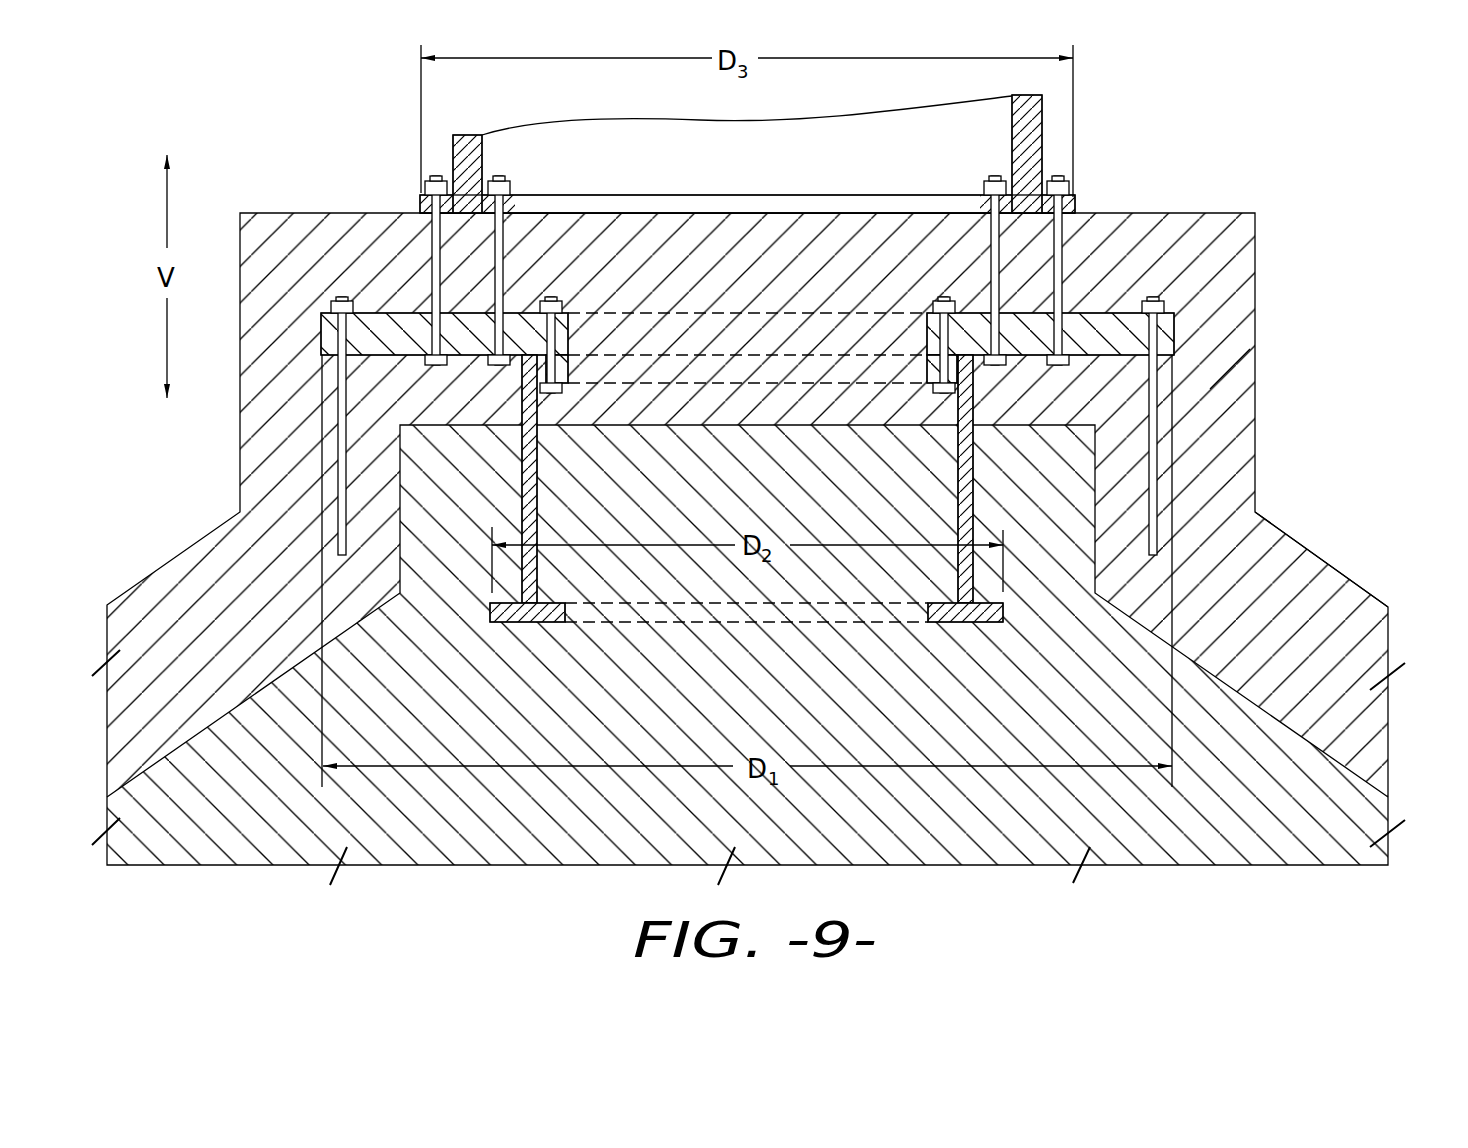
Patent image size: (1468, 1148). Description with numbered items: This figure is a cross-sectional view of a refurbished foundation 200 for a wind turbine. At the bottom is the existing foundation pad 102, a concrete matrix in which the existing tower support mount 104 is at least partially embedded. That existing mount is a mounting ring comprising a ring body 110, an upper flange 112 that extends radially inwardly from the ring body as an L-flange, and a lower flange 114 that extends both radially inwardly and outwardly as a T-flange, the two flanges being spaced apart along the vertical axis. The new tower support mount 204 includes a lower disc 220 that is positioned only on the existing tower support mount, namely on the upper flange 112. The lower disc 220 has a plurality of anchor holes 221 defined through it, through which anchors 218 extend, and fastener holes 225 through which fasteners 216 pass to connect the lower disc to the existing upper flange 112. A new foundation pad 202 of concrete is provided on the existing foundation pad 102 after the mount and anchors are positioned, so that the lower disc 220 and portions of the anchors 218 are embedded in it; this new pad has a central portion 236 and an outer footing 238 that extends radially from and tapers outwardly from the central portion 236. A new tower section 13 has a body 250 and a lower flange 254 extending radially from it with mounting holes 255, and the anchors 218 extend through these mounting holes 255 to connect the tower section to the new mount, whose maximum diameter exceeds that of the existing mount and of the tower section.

The tower section 13 is at (1050, 127).
The existing foundation pad 102 is at (525, 814).
The existing tower support mount 104 is at (756, 537).
The ring body 110 is at (520, 520).
The upper flange 112 is at (572, 350).
The lower flange 114 is at (512, 610).
The refurbished foundation 200 is at (1262, 155).
The new foundation pad 202 is at (761, 680).
The new tower support mount 204 is at (1202, 280).
The fastener 216 is at (924, 337).
The anchor 218 is at (1068, 297).
The lower disc 220 is at (773, 310).
The anchor hole 221 is at (1072, 327).
The fastener hole 225 is at (925, 343).
The central portion 236 is at (1226, 388).
The outer footing 238 is at (1330, 590).
The body 250 is at (742, 134).
The lower flange 254 is at (1077, 200).
The mounting hole 255 is at (1077, 212).